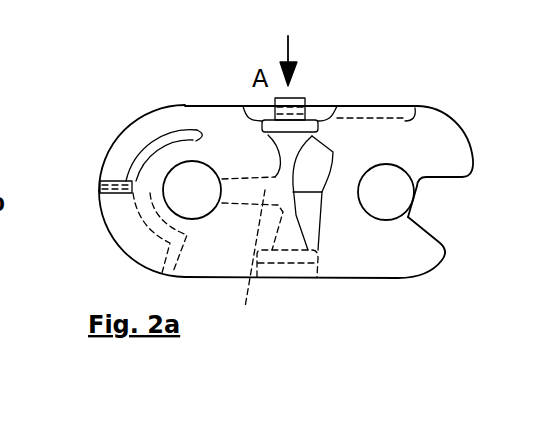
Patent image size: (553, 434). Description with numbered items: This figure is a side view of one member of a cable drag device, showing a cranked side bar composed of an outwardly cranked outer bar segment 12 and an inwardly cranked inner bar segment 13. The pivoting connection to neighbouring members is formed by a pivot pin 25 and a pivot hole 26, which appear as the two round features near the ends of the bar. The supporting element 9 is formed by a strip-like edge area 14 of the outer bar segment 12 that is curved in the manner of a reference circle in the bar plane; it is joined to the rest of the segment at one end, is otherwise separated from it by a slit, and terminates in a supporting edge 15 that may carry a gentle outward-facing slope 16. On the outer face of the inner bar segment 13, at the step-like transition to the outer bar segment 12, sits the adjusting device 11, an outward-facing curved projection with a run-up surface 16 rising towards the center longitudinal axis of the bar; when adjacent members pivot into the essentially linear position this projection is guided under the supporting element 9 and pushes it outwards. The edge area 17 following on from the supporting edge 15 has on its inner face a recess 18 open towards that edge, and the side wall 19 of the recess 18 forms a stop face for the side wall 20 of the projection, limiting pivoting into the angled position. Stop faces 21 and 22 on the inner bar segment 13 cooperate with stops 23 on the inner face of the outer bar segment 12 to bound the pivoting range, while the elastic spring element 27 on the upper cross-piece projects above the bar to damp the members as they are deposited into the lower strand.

The supporting element 9 is at (162, 122).
The adjusting device 11 is at (327, 148).
The outer bar segment 12 is at (140, 256).
The inner bar segment 13 is at (443, 125).
The strip-like edge area 14 is at (122, 135).
The supporting edge 15 is at (112, 190).
The run-up surface 16 is at (120, 186).
The edge area 17 is at (103, 217).
The recess 18 is at (112, 203).
The side wall 19 is at (170, 250).
The side wall 20 is at (305, 180).
The stop face 21 is at (435, 237).
The stop face 22 is at (433, 181).
The stop 23 is at (246, 264).
The pivot pin 25 is at (378, 184).
The pivot hole 26 is at (193, 185).
The elastic spring element 27 is at (296, 101).